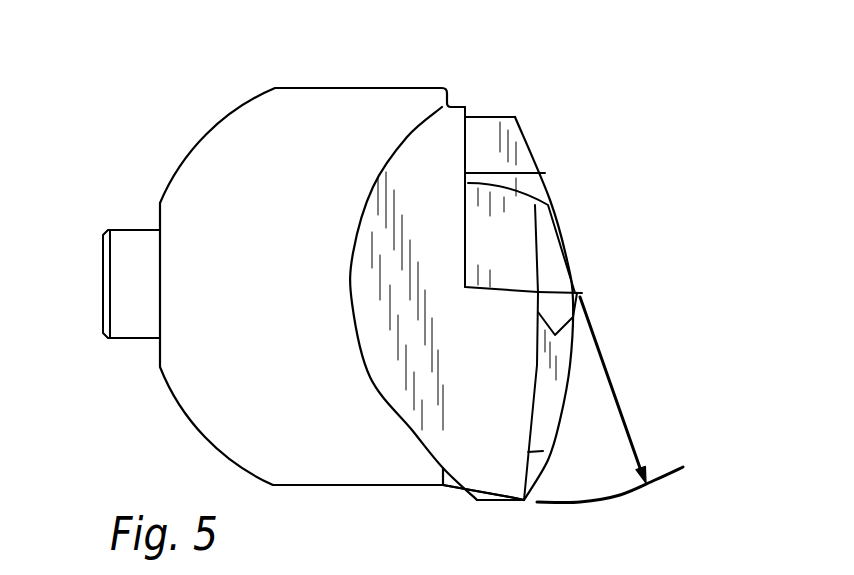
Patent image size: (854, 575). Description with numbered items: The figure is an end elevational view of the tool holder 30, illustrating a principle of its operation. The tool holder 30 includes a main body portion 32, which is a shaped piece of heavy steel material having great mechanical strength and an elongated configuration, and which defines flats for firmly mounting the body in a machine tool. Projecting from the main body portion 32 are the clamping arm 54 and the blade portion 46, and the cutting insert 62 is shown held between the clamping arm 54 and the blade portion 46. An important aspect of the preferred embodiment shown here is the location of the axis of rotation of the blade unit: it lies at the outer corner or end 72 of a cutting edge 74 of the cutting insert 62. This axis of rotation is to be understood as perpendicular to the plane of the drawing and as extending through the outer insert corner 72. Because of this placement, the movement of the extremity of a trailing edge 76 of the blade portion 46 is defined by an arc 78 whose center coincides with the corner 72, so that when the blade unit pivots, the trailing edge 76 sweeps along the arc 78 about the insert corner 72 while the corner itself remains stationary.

The tool holder 30 is at (158, 152).
The main body portion 32 is at (242, 117).
The clamping arm 54 is at (505, 188).
The cutting edge 74 is at (548, 293).
The outer corner 72 is at (582, 293).
The cutting insert 62 is at (552, 307).
The blade portion 46 is at (557, 415).
The trailing edge 76 is at (518, 500).
The arc 78 is at (625, 500).